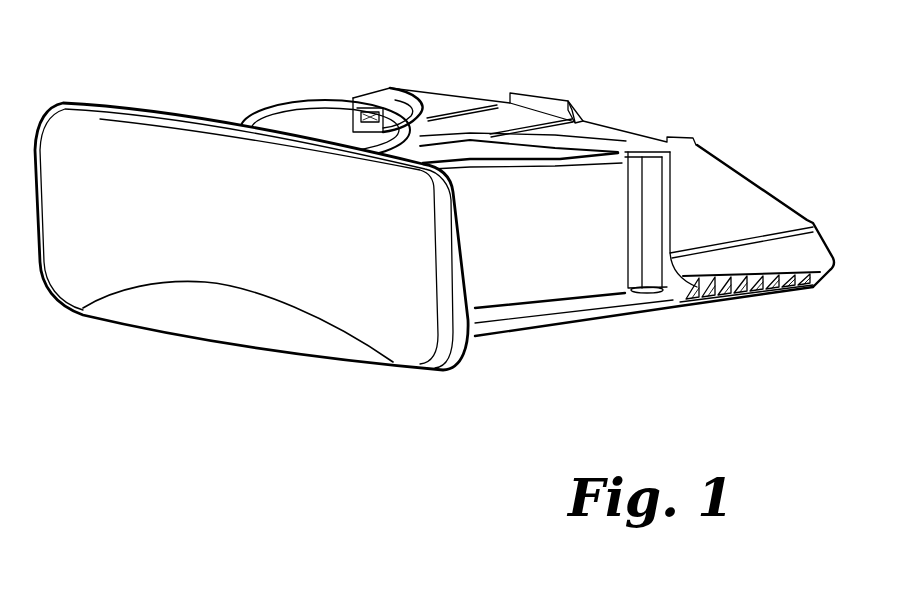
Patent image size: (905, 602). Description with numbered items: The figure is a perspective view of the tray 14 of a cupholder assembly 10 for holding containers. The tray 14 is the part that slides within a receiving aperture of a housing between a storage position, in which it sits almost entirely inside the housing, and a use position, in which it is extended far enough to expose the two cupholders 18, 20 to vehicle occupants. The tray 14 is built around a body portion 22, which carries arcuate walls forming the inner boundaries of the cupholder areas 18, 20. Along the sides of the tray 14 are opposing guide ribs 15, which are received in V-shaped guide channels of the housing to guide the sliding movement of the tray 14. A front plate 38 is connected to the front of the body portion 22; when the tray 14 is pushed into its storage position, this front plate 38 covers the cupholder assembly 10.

The cupholder assembly 10 is at (466, 418).
The tray 14 is at (392, 395).
The guide ribs 15 is at (717, 262).
The cupholder 18 is at (324, 112).
The cupholder 20 is at (540, 146).
The body portion 22 is at (676, 142).
The front plate 38 is at (327, 288).